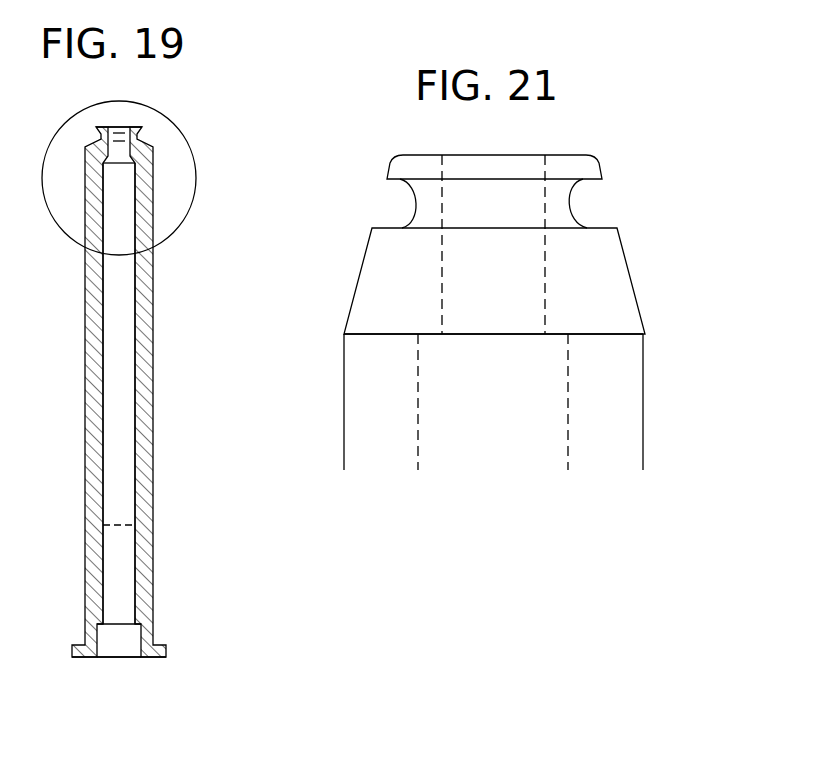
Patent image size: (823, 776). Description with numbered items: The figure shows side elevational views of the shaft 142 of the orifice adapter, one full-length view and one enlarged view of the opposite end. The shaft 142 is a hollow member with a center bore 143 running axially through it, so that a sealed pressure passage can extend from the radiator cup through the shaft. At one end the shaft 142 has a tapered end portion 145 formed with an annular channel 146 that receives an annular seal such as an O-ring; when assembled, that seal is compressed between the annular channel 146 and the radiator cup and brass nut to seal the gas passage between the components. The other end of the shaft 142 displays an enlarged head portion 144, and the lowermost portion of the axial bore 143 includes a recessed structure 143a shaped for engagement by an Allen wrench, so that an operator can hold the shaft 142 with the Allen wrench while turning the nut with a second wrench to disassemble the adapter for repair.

In FIG. 19, the shaft 142 is at (153, 548).
In FIG. 21, the shaft 142 is at (643, 398).
In FIG. 19, the center bore 143 is at (138, 414).
In FIG. 21, the center bore 143 is at (565, 373).
In FIG. 19, the recessed structure 143a is at (138, 645).
In FIG. 19, the enlarged head portion 144 is at (148, 152).
In FIG. 21, the tapered end portion 145 is at (623, 253).
In FIG. 21, the annular channel 146 is at (573, 202).